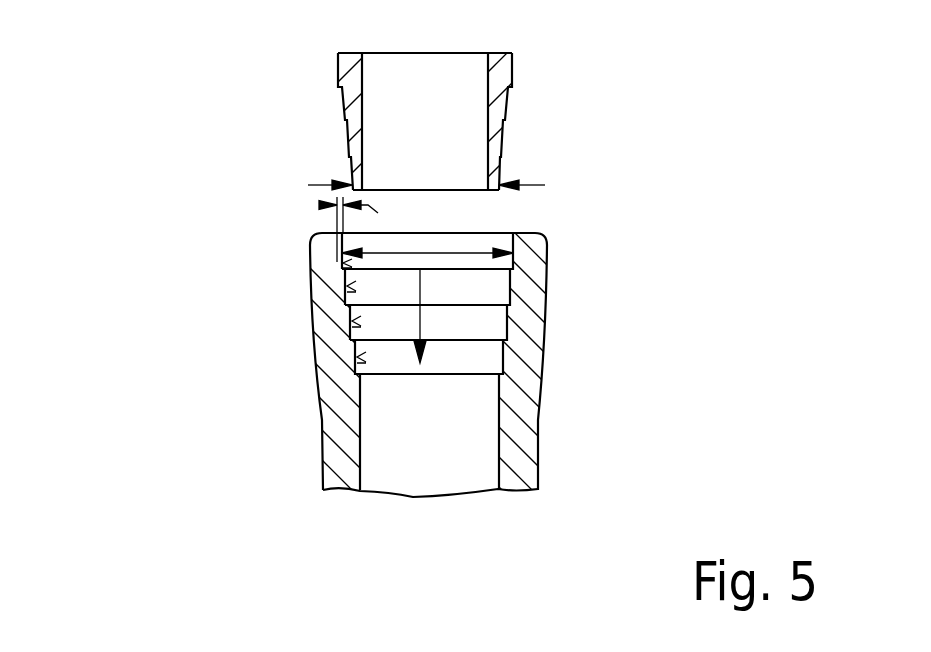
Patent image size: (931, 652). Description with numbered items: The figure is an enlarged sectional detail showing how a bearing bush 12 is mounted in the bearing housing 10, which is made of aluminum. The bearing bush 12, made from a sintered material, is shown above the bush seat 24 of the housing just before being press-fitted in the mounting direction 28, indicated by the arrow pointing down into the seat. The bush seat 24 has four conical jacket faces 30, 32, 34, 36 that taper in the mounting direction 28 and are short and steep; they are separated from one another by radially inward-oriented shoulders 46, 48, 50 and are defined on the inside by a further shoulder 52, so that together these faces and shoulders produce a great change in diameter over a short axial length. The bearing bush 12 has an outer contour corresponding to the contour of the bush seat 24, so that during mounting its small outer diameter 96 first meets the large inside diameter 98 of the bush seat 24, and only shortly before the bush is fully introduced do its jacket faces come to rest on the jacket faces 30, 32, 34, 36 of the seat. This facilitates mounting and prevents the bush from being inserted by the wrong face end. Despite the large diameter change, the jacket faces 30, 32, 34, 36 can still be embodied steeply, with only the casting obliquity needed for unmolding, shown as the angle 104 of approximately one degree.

The bearing housing 10 is at (326, 478).
The bearing bush 12 is at (521, 83).
The bush seat 24 is at (462, 355).
The mounting direction 28 is at (418, 295).
The conical jacket face 30 is at (340, 257).
The conical jacket face 32 is at (347, 285).
The conical jacket face 34 is at (353, 322).
The conical jacket face 36 is at (355, 358).
The shoulder 46 is at (510, 268).
The shoulder 48 is at (507, 305).
The shoulder 50 is at (503, 340).
The shoulder 52 is at (539, 400).
The outer diameter 96 is at (437, 184).
The inside diameter 98 is at (487, 246).
The angle 104 is at (319, 205).